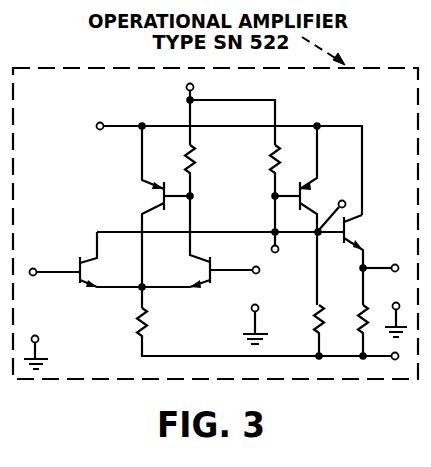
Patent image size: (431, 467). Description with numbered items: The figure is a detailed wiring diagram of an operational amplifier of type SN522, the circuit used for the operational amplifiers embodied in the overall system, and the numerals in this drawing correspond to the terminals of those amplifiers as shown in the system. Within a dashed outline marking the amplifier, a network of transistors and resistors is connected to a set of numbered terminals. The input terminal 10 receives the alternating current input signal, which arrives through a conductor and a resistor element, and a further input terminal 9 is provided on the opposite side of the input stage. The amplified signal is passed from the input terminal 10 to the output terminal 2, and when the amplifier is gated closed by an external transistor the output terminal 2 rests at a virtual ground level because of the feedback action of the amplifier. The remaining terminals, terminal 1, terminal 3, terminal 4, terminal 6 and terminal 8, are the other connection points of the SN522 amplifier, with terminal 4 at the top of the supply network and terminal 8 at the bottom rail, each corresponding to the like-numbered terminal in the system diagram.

The terminal 1 is at (280, 251).
The output terminal 2 is at (394, 263).
The terminal 3 is at (97, 123).
The terminal 4 is at (186, 88).
The terminal 6 is at (342, 200).
The terminal 8 is at (392, 359).
The terminal 9 is at (37, 268).
The input terminal 10 is at (261, 273).